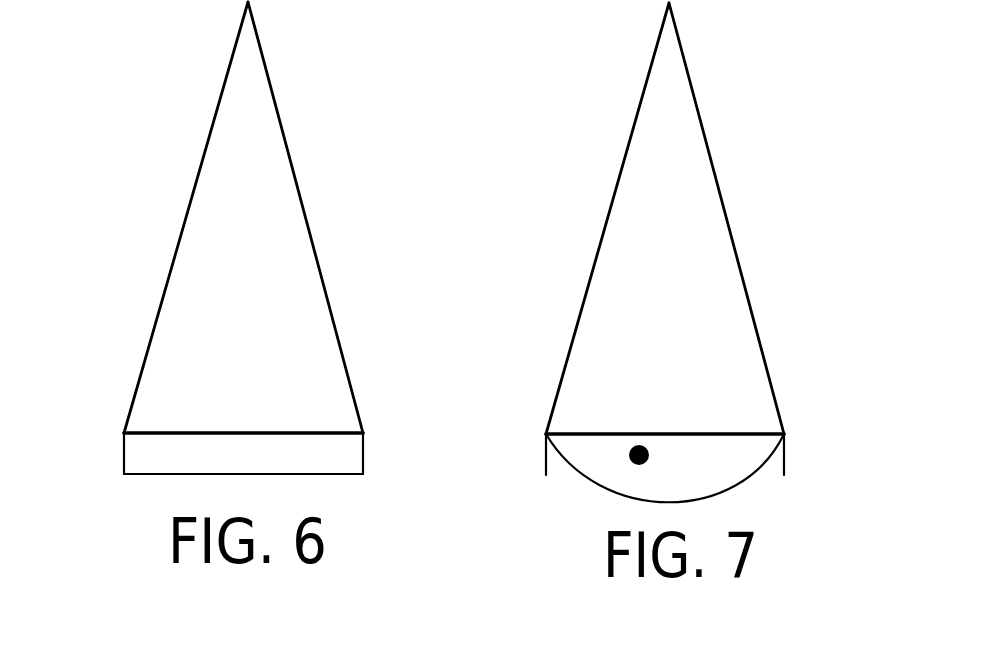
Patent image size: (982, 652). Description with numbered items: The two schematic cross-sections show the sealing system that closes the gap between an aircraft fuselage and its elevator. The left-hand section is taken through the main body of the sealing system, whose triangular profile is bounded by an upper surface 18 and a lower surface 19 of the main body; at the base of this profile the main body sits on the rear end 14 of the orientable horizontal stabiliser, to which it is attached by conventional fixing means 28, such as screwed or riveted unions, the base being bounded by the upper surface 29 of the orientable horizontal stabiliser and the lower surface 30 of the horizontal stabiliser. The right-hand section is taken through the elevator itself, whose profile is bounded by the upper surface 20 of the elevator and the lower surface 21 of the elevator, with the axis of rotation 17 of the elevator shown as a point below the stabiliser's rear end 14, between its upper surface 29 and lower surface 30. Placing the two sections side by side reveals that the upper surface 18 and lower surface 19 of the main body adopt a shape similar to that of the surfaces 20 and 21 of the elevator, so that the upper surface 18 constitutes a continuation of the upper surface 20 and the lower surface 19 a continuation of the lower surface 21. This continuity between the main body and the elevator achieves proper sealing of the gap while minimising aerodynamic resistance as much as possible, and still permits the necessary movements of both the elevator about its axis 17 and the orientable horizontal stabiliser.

In FIG. 7, the rear end of the orientable horizontal stabiliser 14 is at (784, 434).
In FIG. 7, the axis of rotation of the elevator 17 is at (642, 445).
In FIG. 6, the upper surface of the main body 18 is at (180, 238).
In FIG. 6, the lower surface of the main body 19 is at (313, 240).
In FIG. 7, the upper surface of the elevator 20 is at (582, 303).
In FIG. 7, the lower surface of the elevator 21 is at (727, 215).
In FIG. 6, the fixing means 28 is at (297, 431).
In FIG. 6, the upper surface of the orientable horizontal stabiliser 29 is at (124, 452).
In FIG. 7, the upper surface of the orientable horizontal stabiliser 29 is at (544, 453).
In FIG. 6, the lower surface of the horizontal stabiliser 30 is at (364, 452).
In FIG. 7, the lower surface of the horizontal stabiliser 30 is at (785, 460).